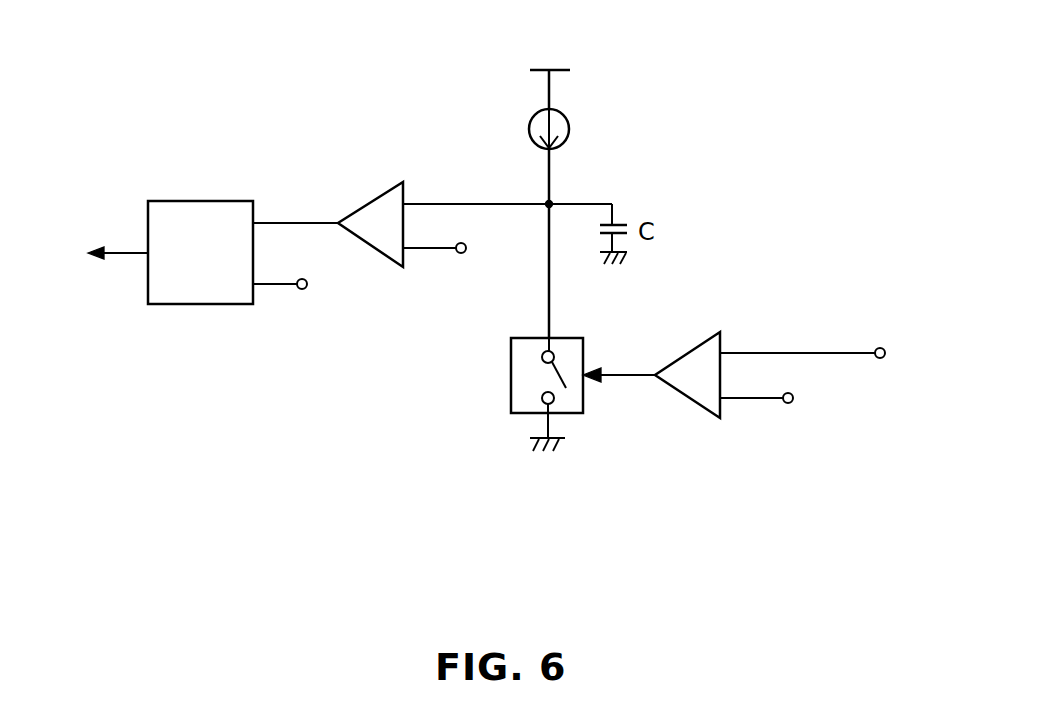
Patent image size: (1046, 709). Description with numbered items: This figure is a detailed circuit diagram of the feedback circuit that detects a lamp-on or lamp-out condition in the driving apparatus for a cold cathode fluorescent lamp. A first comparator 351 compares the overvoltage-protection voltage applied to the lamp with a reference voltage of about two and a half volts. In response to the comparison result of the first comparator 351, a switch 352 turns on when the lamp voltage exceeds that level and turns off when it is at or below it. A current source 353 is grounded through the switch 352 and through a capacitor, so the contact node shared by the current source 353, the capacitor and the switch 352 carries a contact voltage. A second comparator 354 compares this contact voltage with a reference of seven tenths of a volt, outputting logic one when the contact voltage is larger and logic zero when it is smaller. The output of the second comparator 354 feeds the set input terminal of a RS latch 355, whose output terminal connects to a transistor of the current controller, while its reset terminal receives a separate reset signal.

The first comparator 351 is at (695, 403).
The switch 352 is at (511, 395).
The current source 353 is at (531, 122).
The second comparator 354 is at (370, 200).
The RS latch 355 is at (187, 201).